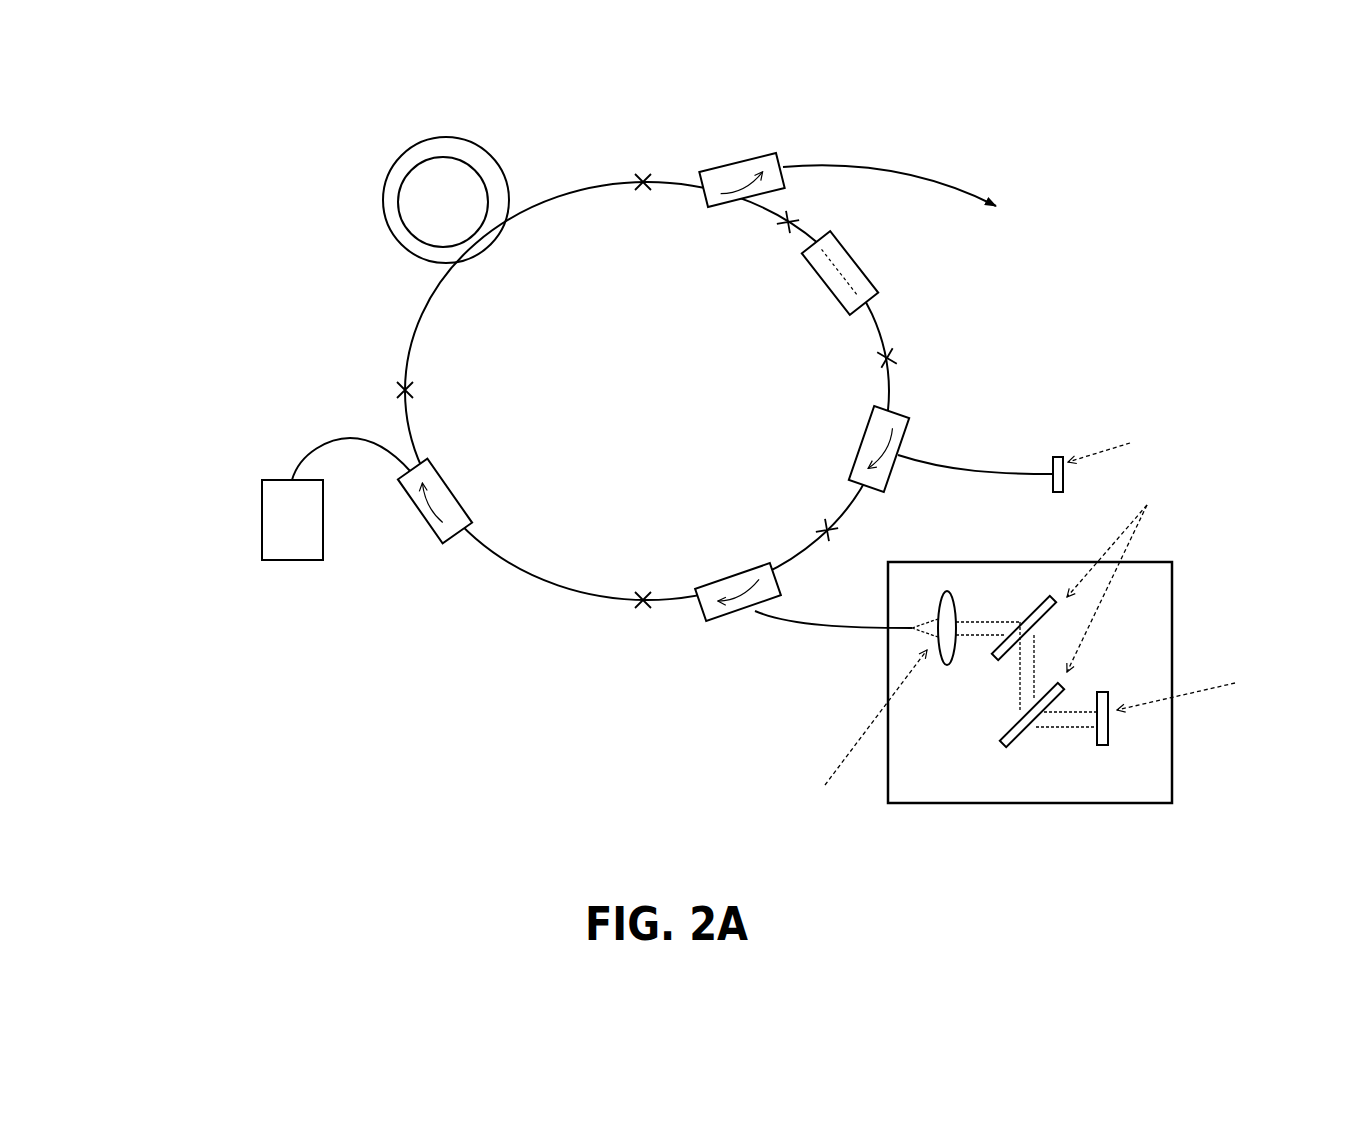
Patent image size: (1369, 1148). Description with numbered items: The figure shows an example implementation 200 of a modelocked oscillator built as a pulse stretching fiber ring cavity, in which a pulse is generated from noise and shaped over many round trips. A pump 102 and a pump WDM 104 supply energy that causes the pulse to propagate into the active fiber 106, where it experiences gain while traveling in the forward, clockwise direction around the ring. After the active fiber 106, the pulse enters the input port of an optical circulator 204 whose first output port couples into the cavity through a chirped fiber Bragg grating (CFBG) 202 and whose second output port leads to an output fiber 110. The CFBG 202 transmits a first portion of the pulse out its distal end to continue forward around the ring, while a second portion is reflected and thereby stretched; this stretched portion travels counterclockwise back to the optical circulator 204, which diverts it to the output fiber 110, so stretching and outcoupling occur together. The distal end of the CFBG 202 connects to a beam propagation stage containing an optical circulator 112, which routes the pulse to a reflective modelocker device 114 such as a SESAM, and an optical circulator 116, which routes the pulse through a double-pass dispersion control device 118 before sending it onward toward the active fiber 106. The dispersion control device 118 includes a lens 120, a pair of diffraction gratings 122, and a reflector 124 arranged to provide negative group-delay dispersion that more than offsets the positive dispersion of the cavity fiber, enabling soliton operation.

The example implementation of a modelocked oscillator 200 is at (181, 82).
The pump 102 is at (262, 518).
The pump WDM 104 is at (540, 471).
The active fiber 106 is at (382, 206).
The output fiber 110 is at (1052, 192).
The optical circulator 112 is at (870, 418).
The reflective modelocker device (SESAM) 114 is at (1187, 420).
The optical circulator 116 is at (733, 613).
The dispersion control device 118 is at (957, 805).
The lens 120 is at (750, 782).
The pair of diffraction gratings 122 is at (1214, 540).
The reflector 124 is at (1288, 700).
The chirped fiber Bragg grating (CFBG) 202 is at (808, 268).
The optical circulator 204 is at (742, 170).